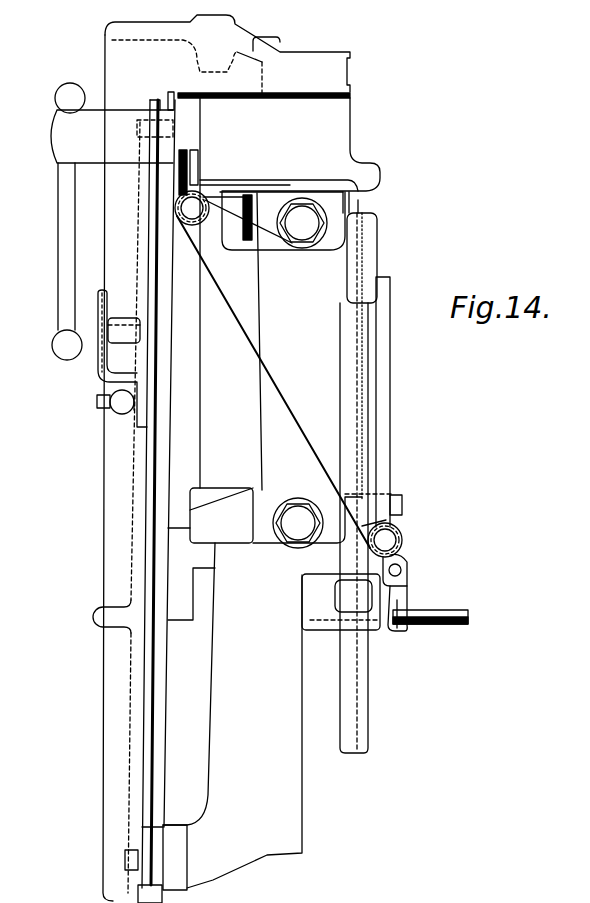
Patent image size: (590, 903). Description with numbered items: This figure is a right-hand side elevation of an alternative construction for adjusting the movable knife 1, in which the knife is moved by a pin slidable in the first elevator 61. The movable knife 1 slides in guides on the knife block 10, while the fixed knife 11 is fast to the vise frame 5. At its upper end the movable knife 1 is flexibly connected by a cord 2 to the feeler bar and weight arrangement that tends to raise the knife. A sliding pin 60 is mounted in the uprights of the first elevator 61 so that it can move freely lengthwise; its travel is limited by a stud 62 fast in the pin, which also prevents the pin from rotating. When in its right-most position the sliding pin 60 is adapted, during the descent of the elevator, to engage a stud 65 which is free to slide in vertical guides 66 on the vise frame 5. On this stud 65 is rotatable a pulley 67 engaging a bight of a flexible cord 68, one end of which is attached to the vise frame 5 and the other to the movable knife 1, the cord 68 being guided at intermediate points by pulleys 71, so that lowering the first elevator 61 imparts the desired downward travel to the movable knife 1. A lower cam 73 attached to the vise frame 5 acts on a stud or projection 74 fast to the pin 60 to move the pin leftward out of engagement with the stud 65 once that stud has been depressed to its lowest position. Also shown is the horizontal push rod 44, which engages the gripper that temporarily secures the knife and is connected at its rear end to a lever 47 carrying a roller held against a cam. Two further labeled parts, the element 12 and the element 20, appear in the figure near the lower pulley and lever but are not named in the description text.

The movable knife 1 is at (368, 675).
The cord 2 is at (359, 207).
The vise frame 5 is at (271, 715).
The knife block 10 is at (274, 323).
The fixed knife 11 is at (382, 363).
The link 12 is at (400, 570).
The stop 20 is at (395, 497).
The push rod 44 is at (450, 625).
The lever 47 is at (405, 600).
The sliding pin 60 is at (115, 410).
The first elevator 61 is at (108, 35).
The stud 62 is at (150, 403).
The stud 65 is at (120, 323).
The vertical guides 66 is at (158, 258).
The pulley 67 is at (187, 328).
The flexible cord 68 is at (200, 237).
The pulleys 71 is at (196, 200).
The lower cam 73 is at (102, 373).
The stud or projection 74 is at (98, 402).